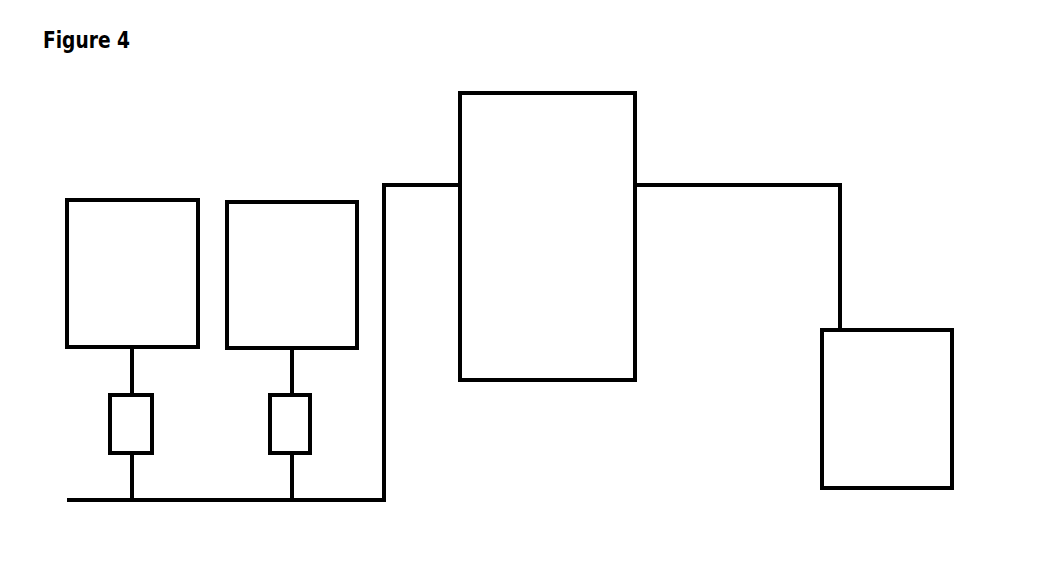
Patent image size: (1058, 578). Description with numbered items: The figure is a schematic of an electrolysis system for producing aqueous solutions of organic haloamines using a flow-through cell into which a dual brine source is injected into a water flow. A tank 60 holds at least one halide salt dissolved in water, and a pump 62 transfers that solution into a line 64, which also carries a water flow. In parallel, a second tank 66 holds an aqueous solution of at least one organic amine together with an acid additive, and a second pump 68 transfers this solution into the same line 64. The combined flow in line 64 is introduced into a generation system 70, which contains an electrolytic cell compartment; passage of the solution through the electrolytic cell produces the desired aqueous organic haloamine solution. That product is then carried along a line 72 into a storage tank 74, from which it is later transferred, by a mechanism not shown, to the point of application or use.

The tank 60 is at (102, 197).
The pump 62 is at (108, 432).
The line 64 is at (228, 507).
The tank 66 is at (282, 199).
The pump 68 is at (268, 432).
The generation system 70 is at (477, 148).
The line 72 is at (728, 180).
The storage tank 74 is at (887, 318).